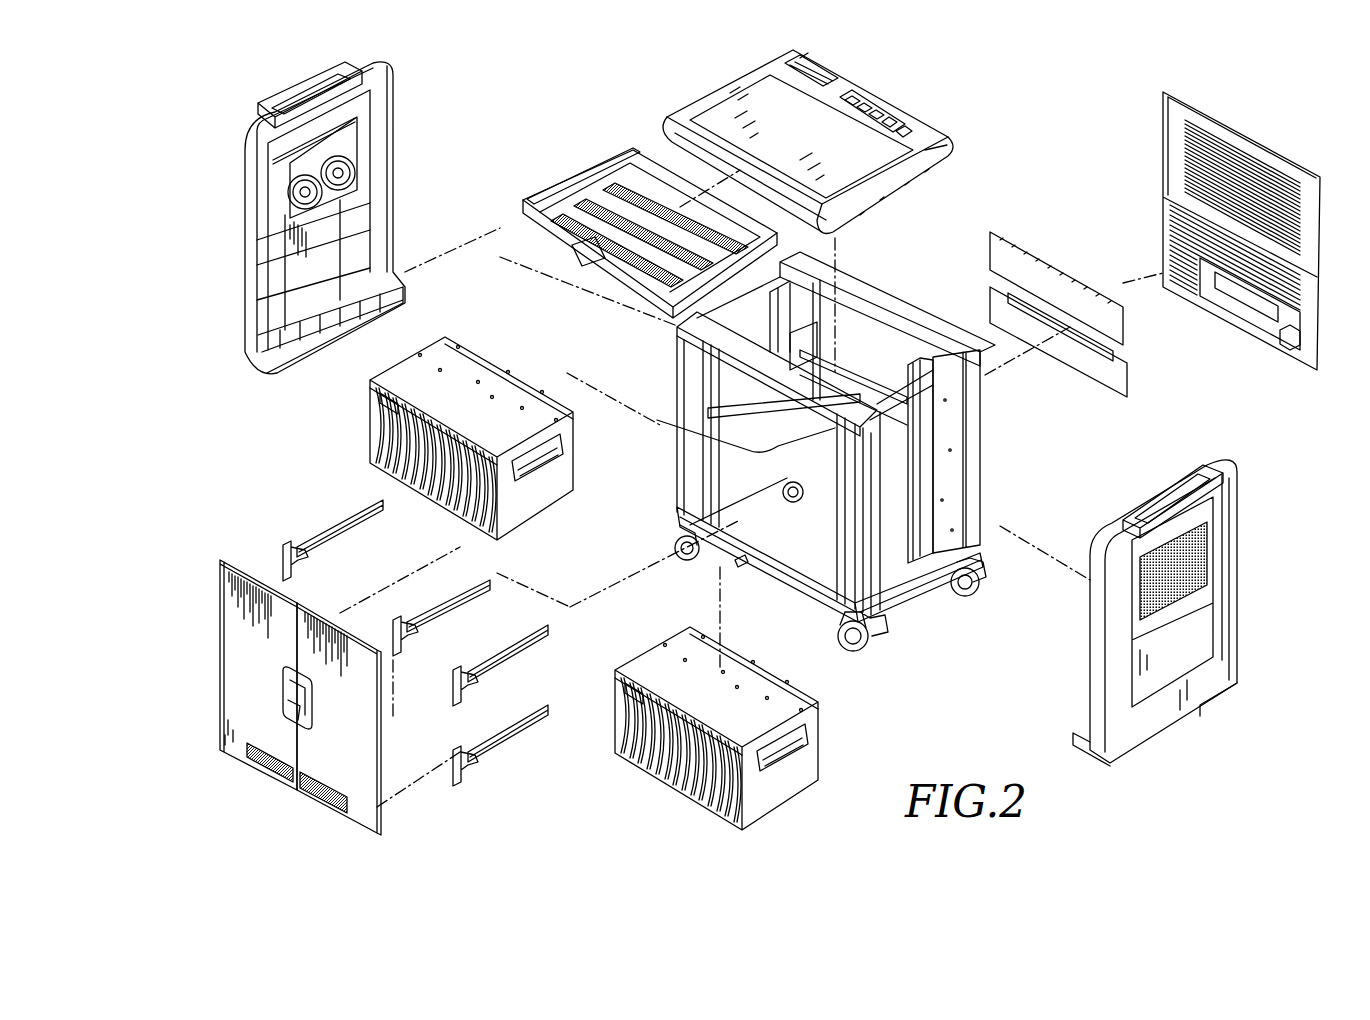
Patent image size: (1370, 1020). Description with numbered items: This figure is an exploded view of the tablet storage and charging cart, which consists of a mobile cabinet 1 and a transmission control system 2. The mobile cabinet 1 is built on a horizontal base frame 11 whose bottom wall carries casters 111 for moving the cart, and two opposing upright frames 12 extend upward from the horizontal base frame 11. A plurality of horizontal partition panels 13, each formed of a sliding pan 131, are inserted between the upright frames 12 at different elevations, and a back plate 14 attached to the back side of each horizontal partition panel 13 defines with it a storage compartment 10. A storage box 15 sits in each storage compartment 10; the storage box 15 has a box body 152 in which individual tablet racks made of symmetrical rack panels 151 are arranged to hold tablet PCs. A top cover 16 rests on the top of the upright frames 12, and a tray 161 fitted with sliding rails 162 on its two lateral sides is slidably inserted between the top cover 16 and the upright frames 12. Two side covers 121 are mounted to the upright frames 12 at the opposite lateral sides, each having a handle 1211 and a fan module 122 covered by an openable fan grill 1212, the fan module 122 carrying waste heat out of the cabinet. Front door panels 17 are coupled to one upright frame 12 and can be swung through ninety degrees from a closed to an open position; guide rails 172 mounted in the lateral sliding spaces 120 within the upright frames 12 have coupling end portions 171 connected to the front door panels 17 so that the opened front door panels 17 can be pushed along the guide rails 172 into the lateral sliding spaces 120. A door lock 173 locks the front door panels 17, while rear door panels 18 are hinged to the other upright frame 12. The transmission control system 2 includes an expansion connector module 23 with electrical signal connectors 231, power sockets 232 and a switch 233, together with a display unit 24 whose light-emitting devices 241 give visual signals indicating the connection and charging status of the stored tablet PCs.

The mobile cabinet 1 is at (838, 460).
The storage compartment 10 is at (832, 433).
The horizontal base frame 11 is at (797, 560).
The casters 111 is at (868, 650).
The upright frames 12 is at (692, 379).
The lateral sliding spaces 120 is at (918, 450).
The side covers 121 is at (742, 414).
The handle 1211 is at (263, 112).
The fan grill 1212 is at (1207, 563).
The fan module 122 is at (297, 188).
The horizontal partition panels 13 is at (698, 411).
The sliding pan 131 is at (800, 446).
The back plate 14 is at (1120, 364).
The storage box 15 is at (598, 583).
The rack panels 151 is at (386, 443).
The box body 152 is at (537, 503).
The top cover 16 is at (770, 170).
The tray 161 is at (642, 225).
The sliding rails 162 is at (633, 153).
The front door panels 17 is at (271, 697).
The coupling end portion 171 is at (458, 760).
The guide rails 172 is at (510, 738).
The door lock 173 is at (278, 697).
The rear door panels 18 is at (1170, 228).
The transmission control system 2 is at (844, 139).
The expansion connector module 23 is at (924, 113).
The electrical signal connectors 231 is at (915, 130).
The power sockets 232 is at (880, 110).
The switch 233 is at (950, 156).
The display unit 24 is at (810, 139).
The light-emitting devices 241 is at (780, 59).